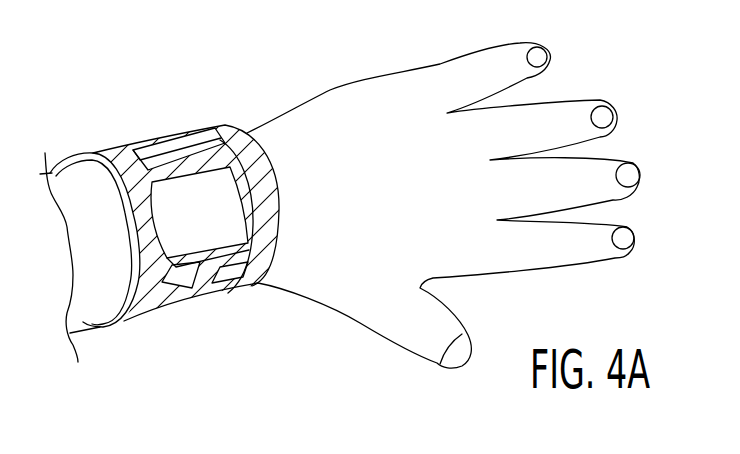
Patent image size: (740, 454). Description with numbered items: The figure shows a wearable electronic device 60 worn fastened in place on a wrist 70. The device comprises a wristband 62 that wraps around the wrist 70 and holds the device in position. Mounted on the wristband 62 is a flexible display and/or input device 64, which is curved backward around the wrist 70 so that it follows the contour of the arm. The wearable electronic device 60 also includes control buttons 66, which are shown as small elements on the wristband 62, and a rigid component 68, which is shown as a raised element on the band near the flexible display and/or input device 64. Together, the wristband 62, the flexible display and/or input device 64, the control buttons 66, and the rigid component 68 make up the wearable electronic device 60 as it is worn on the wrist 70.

The wearable electronic device 60 is at (242, 218).
The wristband 62 is at (140, 312).
The flexible display and/or input device 64 is at (233, 193).
The control buttons 66 is at (182, 284).
The rigid component 68 is at (159, 153).
The wrist 70 is at (395, 87).